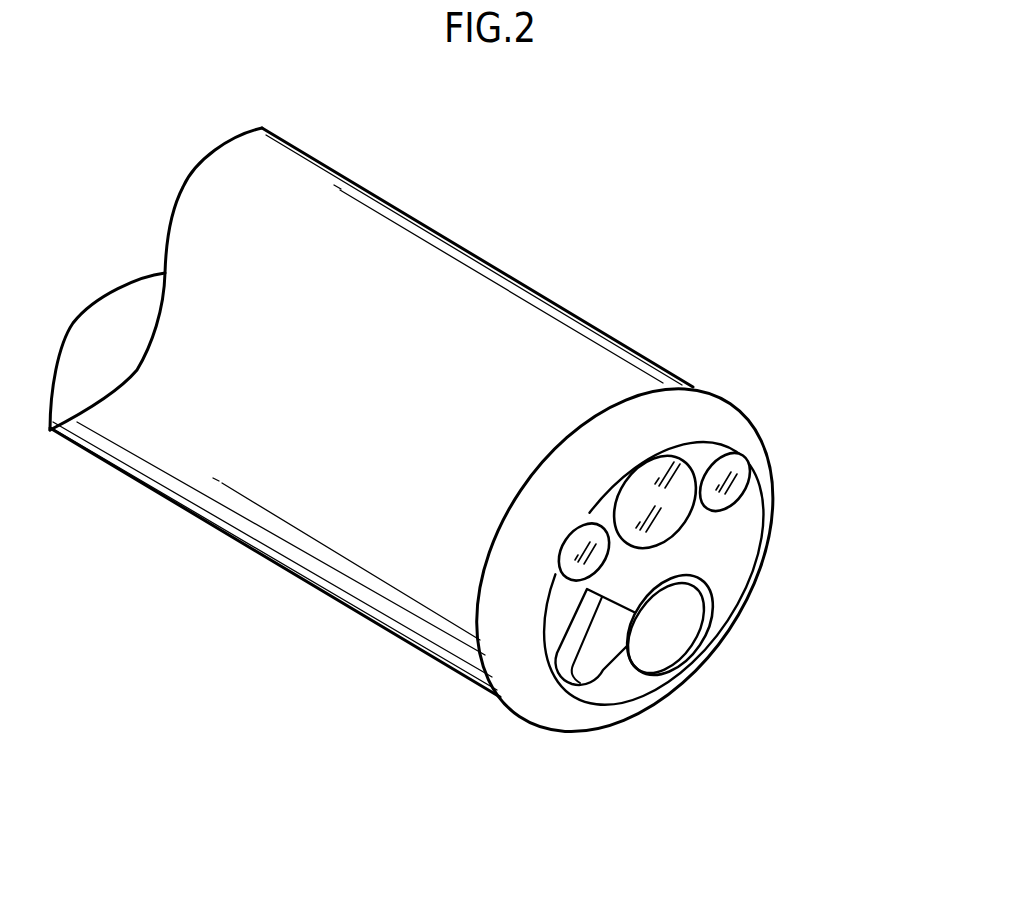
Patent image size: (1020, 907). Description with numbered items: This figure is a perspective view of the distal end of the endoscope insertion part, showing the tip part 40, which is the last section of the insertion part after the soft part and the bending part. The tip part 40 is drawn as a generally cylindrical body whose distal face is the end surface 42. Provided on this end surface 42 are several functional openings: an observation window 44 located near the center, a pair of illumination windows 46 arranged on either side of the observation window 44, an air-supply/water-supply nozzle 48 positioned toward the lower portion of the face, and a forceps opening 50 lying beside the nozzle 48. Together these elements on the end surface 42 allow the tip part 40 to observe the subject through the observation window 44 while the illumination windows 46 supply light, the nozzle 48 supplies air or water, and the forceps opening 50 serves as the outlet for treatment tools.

The tip part 40 is at (527, 312).
The end surface 42 is at (730, 550).
The observation window 44 is at (682, 477).
The illumination windows 46 is at (742, 463).
The air-supply/water-supply nozzle 48 is at (595, 652).
The forceps opening 50 is at (673, 628).